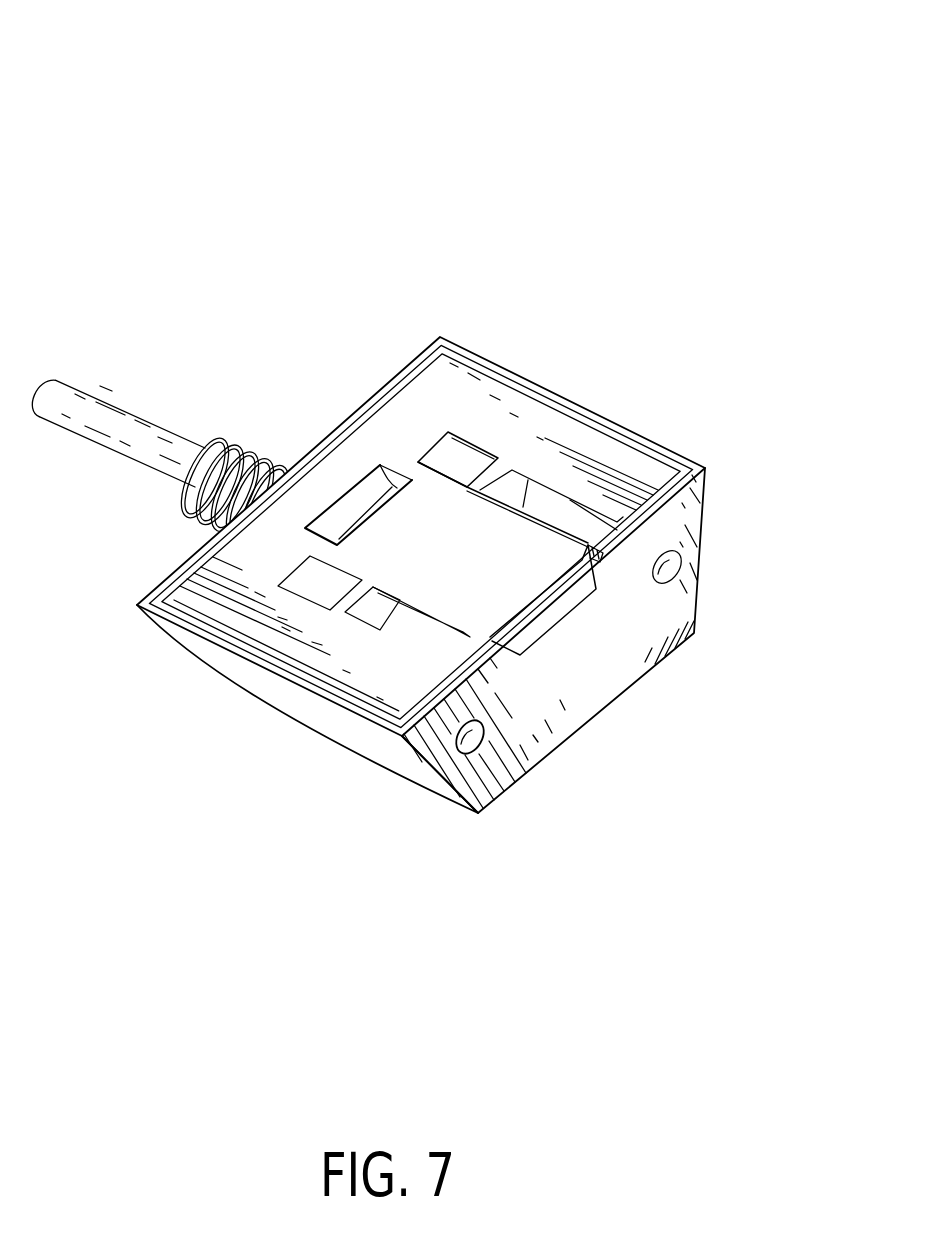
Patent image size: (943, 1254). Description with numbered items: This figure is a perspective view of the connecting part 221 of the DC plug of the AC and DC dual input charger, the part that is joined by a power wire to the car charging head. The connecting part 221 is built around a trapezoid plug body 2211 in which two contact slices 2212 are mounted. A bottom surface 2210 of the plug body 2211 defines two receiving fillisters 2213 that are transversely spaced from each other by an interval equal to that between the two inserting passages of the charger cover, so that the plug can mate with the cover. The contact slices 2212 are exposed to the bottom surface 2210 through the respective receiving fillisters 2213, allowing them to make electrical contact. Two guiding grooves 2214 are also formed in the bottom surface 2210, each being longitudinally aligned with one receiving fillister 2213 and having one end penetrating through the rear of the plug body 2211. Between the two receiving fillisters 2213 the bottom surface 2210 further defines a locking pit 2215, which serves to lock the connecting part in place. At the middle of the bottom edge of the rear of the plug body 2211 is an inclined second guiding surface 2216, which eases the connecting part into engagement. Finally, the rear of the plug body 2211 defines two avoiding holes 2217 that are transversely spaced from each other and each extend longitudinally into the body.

The connecting part 221 is at (97, 58).
The bottom surface 2210 is at (285, 622).
The plug body 2211 is at (313, 717).
The contact slices 2212 is at (463, 463).
The receiving fillisters 2213 is at (415, 458).
The guiding grooves 2214 is at (563, 512).
The locking pit 2215 is at (337, 523).
The second guiding surface 2216 is at (533, 612).
The avoiding holes 2217 is at (480, 735).